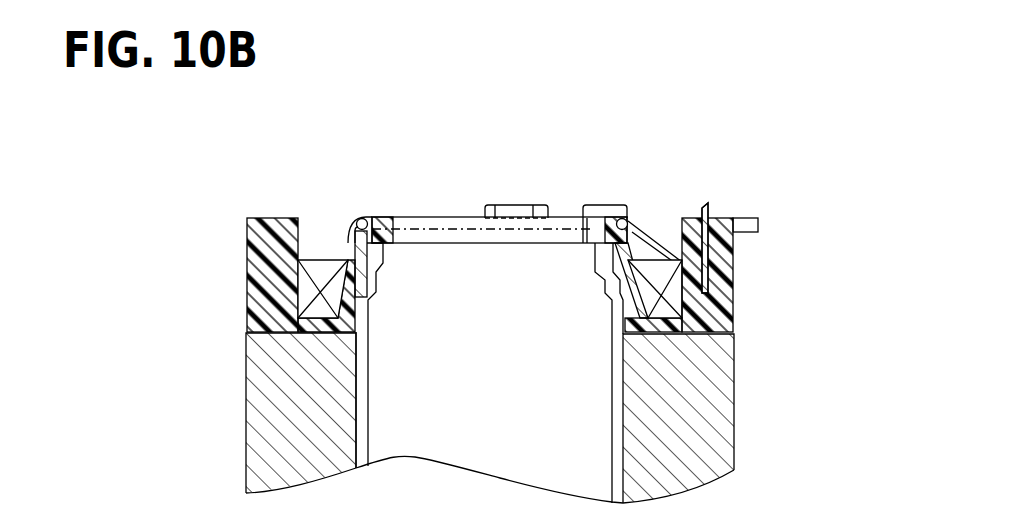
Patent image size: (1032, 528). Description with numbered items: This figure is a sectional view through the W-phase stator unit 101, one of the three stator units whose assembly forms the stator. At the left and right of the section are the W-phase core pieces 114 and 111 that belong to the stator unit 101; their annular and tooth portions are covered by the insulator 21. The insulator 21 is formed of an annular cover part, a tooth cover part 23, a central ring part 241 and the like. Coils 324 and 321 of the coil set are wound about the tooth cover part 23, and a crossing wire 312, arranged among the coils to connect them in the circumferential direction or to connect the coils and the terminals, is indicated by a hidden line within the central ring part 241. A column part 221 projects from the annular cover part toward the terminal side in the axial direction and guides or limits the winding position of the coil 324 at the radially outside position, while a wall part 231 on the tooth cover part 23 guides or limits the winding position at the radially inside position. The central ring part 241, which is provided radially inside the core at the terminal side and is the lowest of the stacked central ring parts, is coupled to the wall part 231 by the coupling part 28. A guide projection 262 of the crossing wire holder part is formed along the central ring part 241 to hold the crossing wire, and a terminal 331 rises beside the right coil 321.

The stator unit 101 is at (836, 151).
The insulator 21 is at (240, 224).
The column part 221 is at (268, 250).
The coil 324 is at (305, 290).
The tooth cover part 23 is at (310, 334).
The W-phase core piece 114 is at (262, 441).
The wall part 231 is at (355, 257).
The central ring part 241 is at (443, 215).
The guide projection 262 is at (512, 207).
The crossing wire 312 is at (461, 232).
The coupling part 28 is at (593, 238).
The terminal 331 is at (709, 210).
The coil 321 is at (665, 309).
The W-phase core piece 111 is at (717, 423).